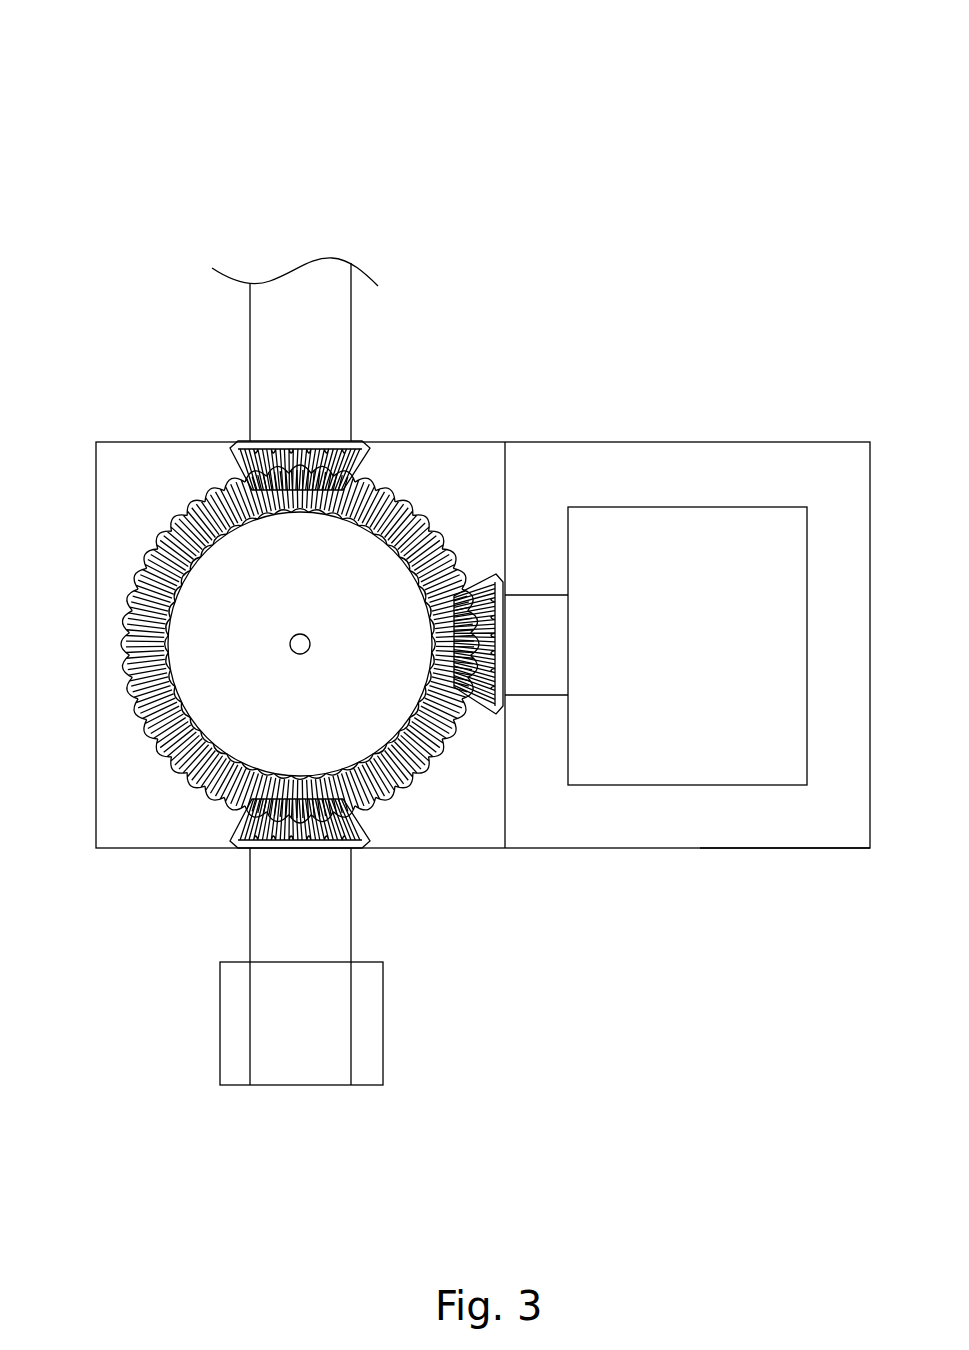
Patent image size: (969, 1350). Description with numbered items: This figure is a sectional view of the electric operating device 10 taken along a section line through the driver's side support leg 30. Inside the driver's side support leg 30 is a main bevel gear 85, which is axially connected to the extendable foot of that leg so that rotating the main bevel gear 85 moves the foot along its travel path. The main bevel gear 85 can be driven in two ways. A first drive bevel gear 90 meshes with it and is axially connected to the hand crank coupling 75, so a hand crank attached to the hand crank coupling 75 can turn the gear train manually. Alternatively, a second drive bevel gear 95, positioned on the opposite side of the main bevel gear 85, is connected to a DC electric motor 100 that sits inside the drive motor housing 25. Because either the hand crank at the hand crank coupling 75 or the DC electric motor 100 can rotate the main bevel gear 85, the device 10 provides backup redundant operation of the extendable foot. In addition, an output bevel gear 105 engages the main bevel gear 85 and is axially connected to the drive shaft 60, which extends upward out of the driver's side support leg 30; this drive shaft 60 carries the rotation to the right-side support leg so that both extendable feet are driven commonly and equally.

The device 10 is at (118, 175).
The drive motor housing 25 is at (785, 850).
The driver's side support leg 30 is at (96, 847).
The drive shaft 60 is at (317, 352).
The hand crank coupling 75 is at (317, 1000).
The main bevel gear 85 is at (144, 582).
The first drive bevel gear 90 is at (252, 848).
The second drive bevel gear 95 is at (483, 598).
The DC electric motor 100 is at (671, 713).
The output bevel gear 105 is at (372, 450).